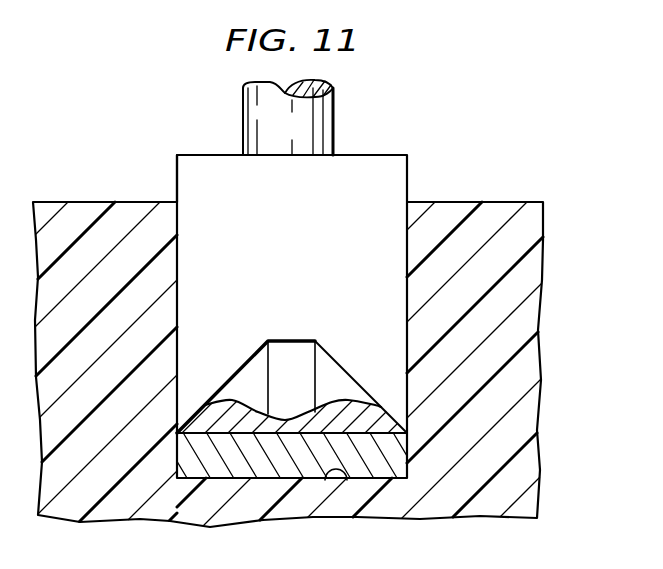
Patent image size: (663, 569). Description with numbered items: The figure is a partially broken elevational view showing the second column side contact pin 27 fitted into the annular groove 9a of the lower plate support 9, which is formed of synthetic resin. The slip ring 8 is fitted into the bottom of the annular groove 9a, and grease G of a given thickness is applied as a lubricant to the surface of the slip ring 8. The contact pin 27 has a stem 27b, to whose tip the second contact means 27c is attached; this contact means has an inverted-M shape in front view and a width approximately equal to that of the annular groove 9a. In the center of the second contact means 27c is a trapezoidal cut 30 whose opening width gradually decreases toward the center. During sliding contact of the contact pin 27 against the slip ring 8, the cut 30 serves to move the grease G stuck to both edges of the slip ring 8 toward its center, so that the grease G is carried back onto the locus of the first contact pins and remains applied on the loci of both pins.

The lower plate support 9 is at (506, 212).
The annular groove 9a is at (343, 481).
The second column side contact pin 27 is at (407, 173).
The stem 27b is at (335, 126).
The second contact means 27c is at (176, 175).
The trapezoidal cut 30 is at (292, 352).
The grease G is at (342, 415).
The slip ring 8 is at (395, 458).